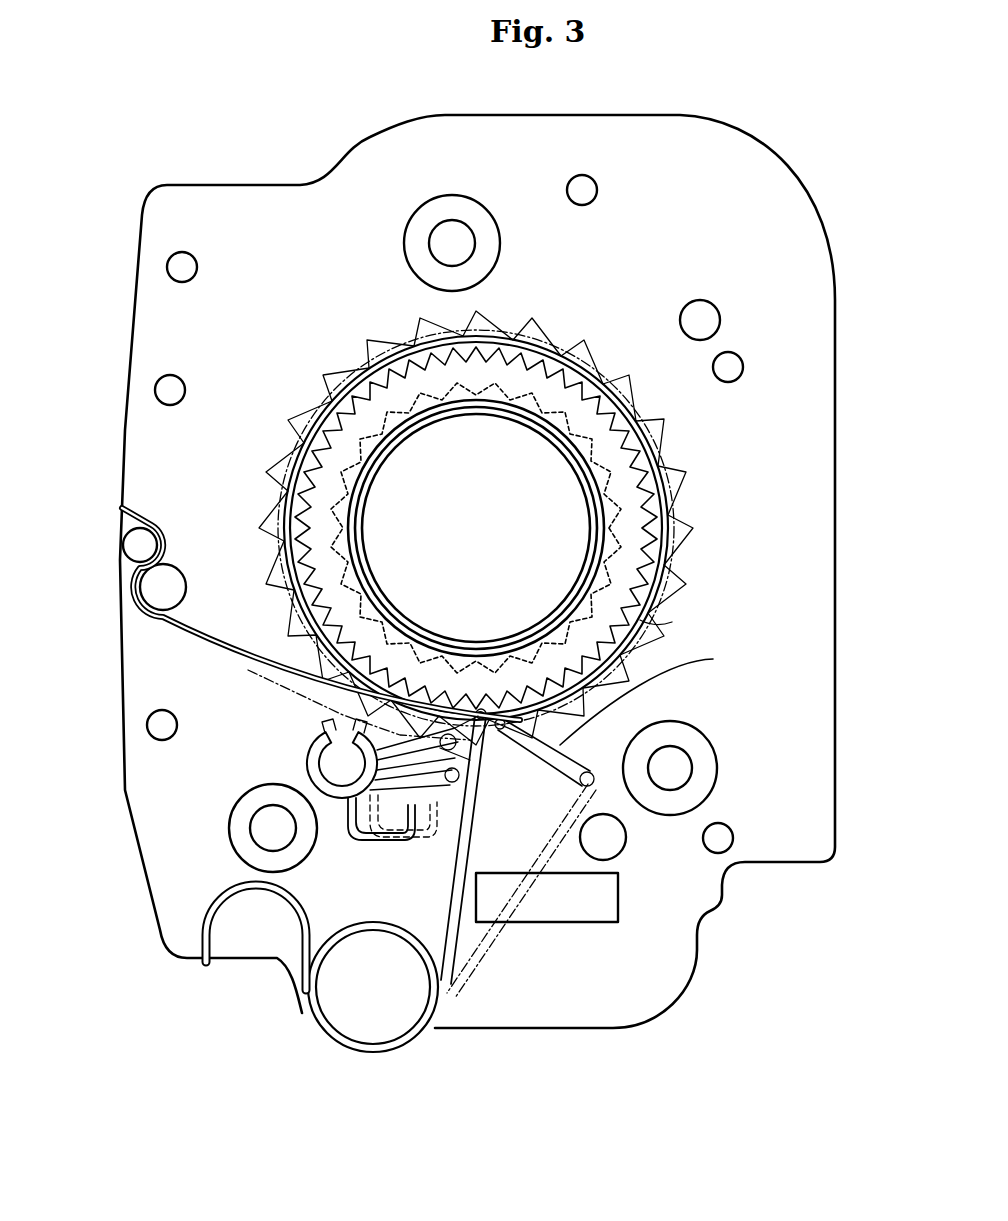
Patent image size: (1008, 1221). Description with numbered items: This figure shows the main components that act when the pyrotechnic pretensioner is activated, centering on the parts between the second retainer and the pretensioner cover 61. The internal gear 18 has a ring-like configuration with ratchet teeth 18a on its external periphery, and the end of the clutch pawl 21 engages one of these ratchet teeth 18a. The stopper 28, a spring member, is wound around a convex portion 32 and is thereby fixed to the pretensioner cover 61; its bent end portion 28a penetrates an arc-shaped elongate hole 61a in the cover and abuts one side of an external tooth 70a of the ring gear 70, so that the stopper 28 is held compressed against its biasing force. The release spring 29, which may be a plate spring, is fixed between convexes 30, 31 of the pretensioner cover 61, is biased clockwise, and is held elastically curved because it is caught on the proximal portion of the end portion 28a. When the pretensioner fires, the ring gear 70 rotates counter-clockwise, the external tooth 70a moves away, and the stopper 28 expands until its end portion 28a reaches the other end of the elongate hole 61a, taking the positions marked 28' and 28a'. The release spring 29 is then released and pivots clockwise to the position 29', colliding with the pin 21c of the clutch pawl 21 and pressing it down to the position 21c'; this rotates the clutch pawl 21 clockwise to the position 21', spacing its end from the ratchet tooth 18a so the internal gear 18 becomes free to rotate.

The internal gear 18 is at (692, 482).
The ratchet teeth 18a is at (692, 573).
The ring gear 70 is at (690, 588).
The external tooth 70a is at (672, 622).
The pretensioner cover 61 is at (838, 748).
The arc-shaped elongate hole 61a is at (594, 774).
The stopper 28 is at (481, 848).
The end portion 28a is at (515, 761).
The stopper (expanded position) 28' is at (521, 891).
The end portion (displaced position) 28a' is at (710, 767).
The convex portion 32 is at (372, 992).
The release spring 29 is at (321, 614).
The release spring (pivoted position) 29' is at (327, 705).
The convex 30 is at (126, 552).
The convex 31 is at (172, 578).
The clutch pawl 21 is at (313, 750).
The clutch pawl (released position) 21' is at (240, 828).
The pin 21c is at (364, 846).
The pin (displaced position) 21c' is at (405, 844).